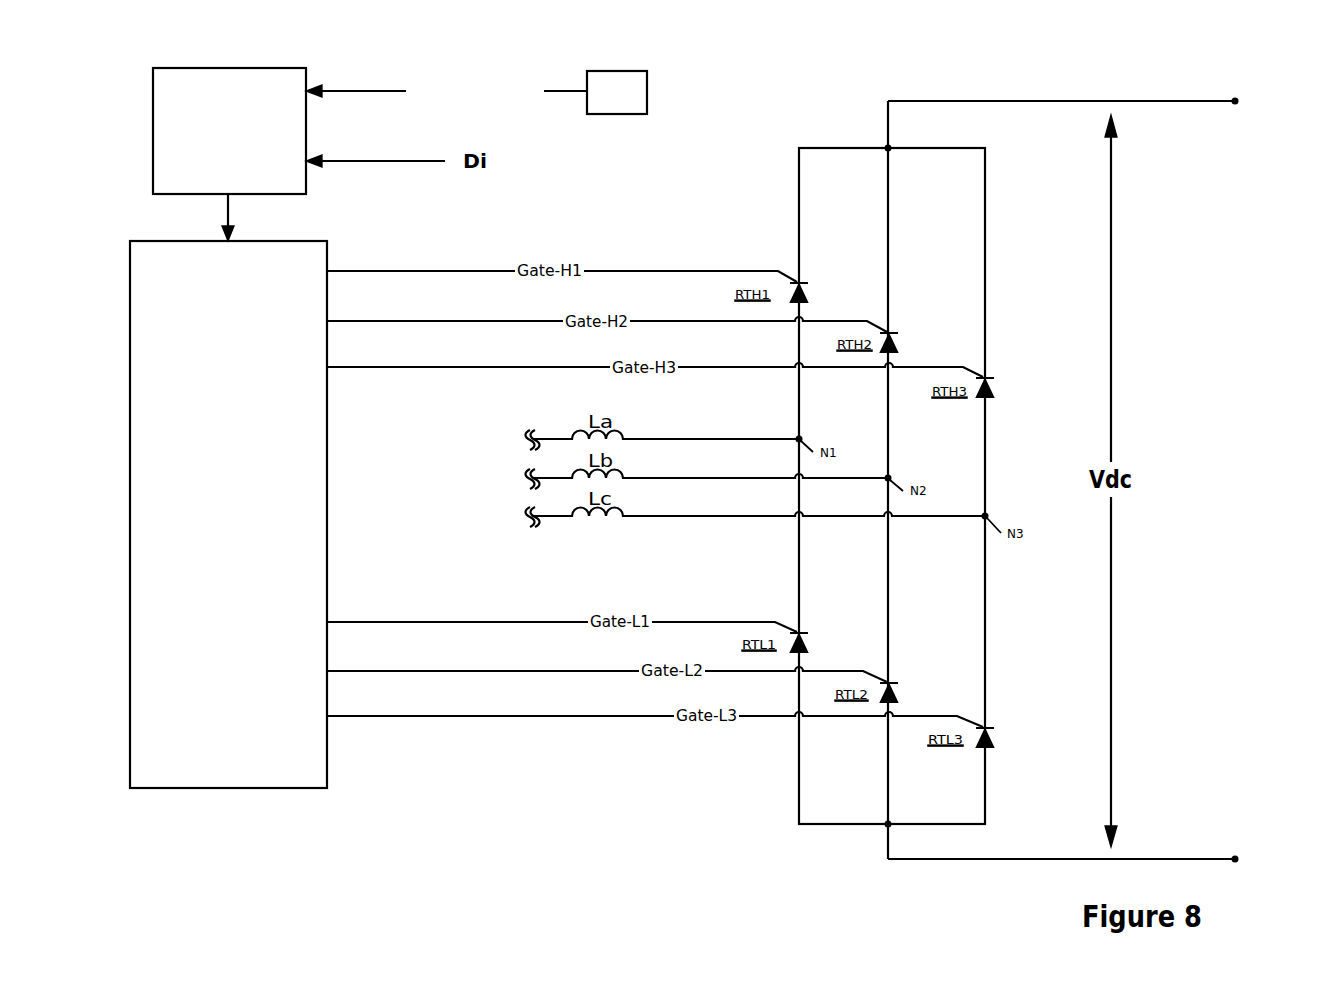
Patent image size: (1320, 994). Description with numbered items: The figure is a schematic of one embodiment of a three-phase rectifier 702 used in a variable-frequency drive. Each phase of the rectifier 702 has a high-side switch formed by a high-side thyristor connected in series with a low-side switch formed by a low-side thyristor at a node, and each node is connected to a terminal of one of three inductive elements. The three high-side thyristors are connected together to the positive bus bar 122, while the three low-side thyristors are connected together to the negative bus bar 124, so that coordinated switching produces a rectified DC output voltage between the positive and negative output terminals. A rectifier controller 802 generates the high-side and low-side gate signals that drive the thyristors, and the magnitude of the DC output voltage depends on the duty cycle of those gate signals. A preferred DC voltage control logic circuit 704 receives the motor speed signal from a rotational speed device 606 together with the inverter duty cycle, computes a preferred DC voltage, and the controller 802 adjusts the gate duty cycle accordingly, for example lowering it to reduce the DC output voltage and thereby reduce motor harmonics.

The three-phase rectifier 702 is at (842, 418).
The preferred DC voltage control logic circuit 704 is at (229, 131).
The rotational speed device 606 is at (476, 92).
The rectifier controller 802 is at (228, 514).
The V+ bus bar 122 is at (1142, 101).
The V− bus bar 124 is at (1142, 859).